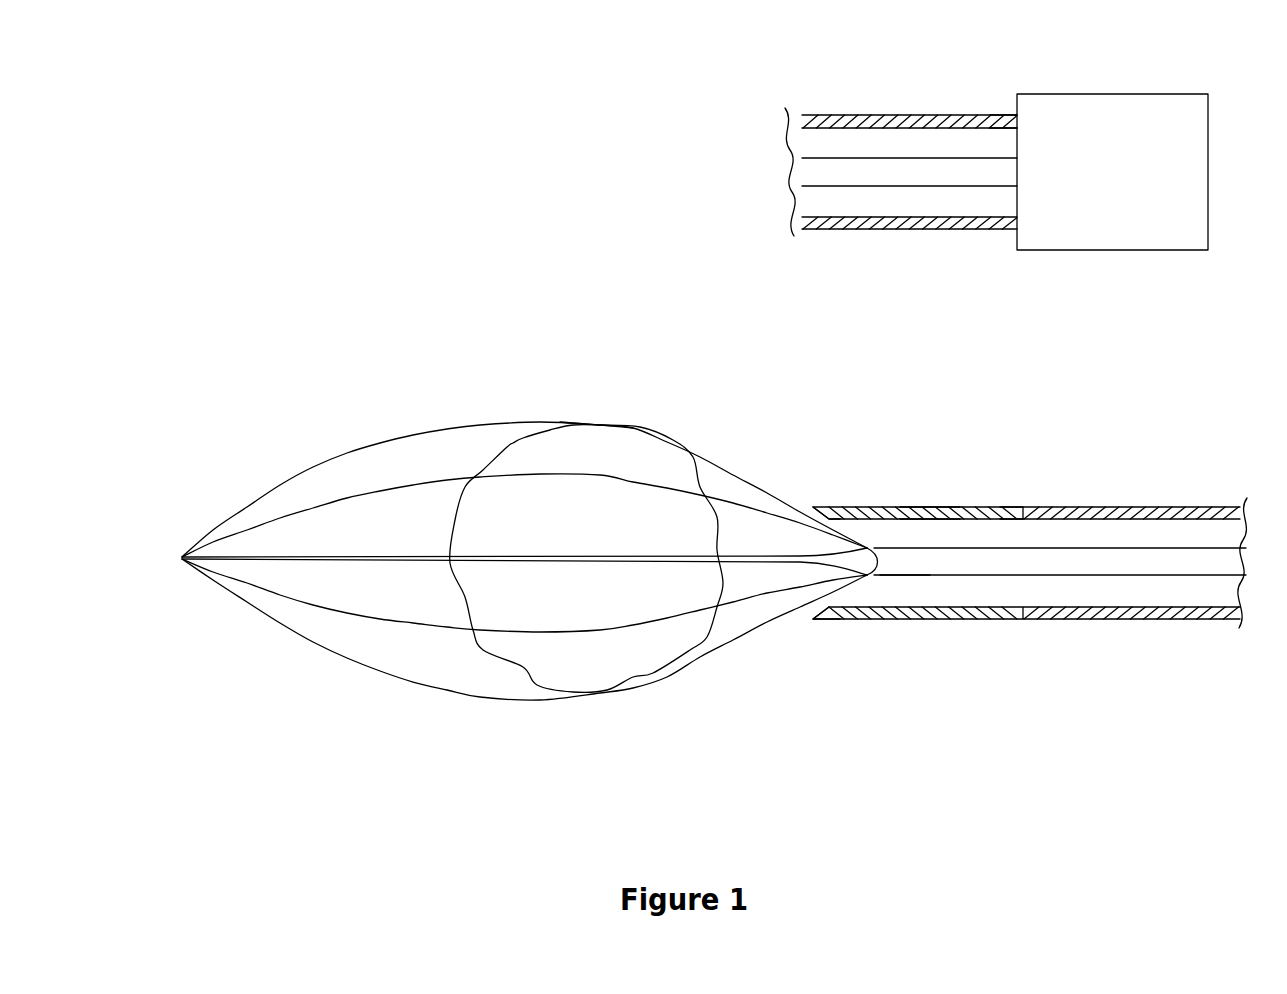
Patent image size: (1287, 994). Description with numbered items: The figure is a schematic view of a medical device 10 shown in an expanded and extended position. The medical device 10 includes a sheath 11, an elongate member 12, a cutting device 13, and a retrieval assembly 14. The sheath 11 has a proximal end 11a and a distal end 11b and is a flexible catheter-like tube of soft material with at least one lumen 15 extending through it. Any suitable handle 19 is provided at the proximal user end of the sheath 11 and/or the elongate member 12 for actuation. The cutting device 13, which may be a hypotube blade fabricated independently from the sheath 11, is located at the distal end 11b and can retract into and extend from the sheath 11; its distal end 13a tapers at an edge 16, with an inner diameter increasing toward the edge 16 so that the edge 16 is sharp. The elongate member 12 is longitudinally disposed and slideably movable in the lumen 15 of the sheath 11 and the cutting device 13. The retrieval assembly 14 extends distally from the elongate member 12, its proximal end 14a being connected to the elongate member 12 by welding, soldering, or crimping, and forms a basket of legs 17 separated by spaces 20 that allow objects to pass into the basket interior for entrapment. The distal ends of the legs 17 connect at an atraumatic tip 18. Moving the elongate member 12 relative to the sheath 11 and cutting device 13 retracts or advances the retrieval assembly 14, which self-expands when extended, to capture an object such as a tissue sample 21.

The medical device 10 is at (368, 729).
The sheath 11 is at (1138, 507).
The proximal end 11a is at (1000, 115).
The distal end 11b is at (1043, 507).
The elongate member 12 is at (1190, 547).
The cutting device 13 is at (933, 507).
The distal end 13a is at (807, 628).
The retrieval assembly 14 is at (725, 682).
The proximal end 14a is at (867, 577).
The lumen 15 is at (912, 592).
The edge 16 is at (813, 507).
The legs 17 is at (703, 457).
The tip 18 is at (182, 553).
The handle 19 is at (1100, 250).
The spaces 20 is at (392, 465).
The tissue sample 21 is at (617, 422).